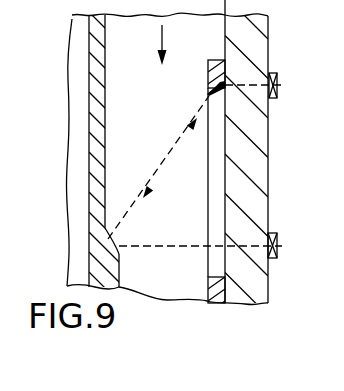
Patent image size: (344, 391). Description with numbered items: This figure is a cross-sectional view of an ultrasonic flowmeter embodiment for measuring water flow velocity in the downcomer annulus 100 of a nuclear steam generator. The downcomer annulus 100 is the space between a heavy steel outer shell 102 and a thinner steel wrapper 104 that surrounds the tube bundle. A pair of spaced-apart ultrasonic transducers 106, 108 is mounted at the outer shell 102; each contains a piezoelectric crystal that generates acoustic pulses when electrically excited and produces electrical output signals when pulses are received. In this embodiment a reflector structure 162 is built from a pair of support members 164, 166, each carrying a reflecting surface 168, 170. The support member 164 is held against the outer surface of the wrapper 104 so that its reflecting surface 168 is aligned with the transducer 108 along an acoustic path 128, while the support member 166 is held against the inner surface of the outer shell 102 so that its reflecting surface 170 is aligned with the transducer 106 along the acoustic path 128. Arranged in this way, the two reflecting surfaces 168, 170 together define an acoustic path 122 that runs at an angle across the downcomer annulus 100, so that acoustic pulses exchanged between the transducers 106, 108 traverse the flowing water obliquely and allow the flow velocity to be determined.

The downcomer annulus 100 is at (152, 159).
The outer shell 102 is at (253, 42).
The wrapper 104 is at (96, 149).
The ultrasonic transducer 106 is at (278, 87).
The ultrasonic transducer 108 is at (278, 246).
The acoustic path 122 is at (170, 160).
The acoustic path 128 is at (175, 245).
The reflector structure 162 is at (203, 286).
The support member 164 is at (113, 262).
The support member 166 is at (214, 69).
The reflecting surface 168 is at (108, 236).
The reflecting surface 170 is at (209, 94).